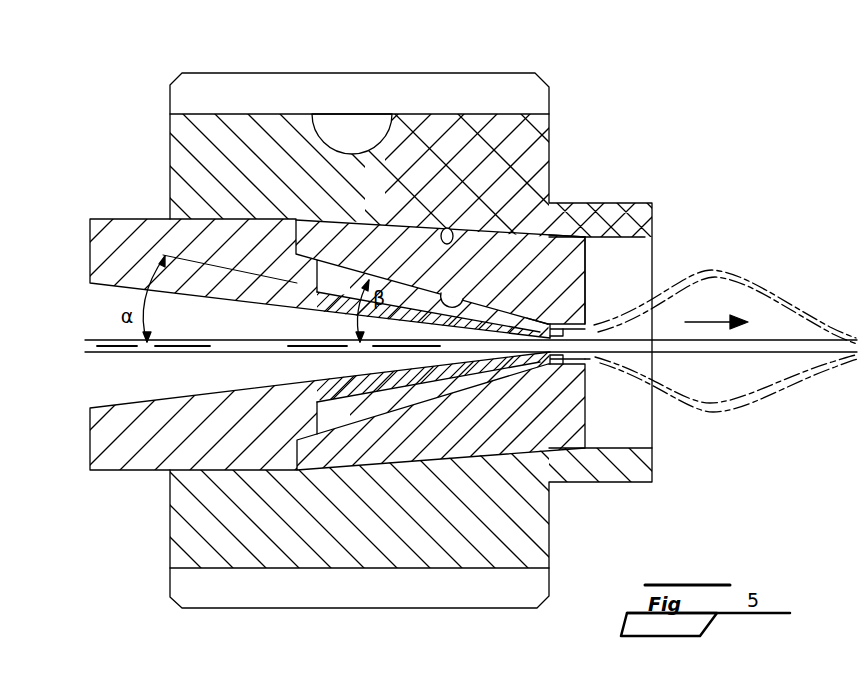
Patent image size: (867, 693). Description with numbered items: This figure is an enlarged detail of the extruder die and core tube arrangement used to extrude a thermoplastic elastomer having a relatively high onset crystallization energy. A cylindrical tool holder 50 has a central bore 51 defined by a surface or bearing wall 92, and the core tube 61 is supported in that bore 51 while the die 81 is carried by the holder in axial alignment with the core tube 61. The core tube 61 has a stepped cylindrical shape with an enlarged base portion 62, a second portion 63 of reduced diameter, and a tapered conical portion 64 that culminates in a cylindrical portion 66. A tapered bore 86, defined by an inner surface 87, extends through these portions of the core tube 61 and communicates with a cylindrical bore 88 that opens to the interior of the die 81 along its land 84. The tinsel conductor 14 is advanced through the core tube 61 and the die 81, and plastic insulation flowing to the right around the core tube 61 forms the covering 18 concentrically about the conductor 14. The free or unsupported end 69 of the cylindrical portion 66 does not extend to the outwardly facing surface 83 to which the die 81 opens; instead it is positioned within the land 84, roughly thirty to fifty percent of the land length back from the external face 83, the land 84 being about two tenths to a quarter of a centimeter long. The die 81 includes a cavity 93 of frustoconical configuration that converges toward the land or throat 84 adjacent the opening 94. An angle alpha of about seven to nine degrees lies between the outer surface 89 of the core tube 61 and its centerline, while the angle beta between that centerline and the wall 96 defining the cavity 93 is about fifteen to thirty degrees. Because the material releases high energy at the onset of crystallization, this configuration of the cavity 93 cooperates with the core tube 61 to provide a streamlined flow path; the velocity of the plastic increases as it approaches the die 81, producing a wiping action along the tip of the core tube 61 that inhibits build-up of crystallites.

The tinsel conductor 14 is at (257, 356).
The covering 18 is at (713, 264).
The tool holder 50 is at (160, 125).
The central bore 51 is at (460, 298).
The core tube 61 is at (337, 395).
The enlarged base portion 62 is at (123, 268).
The second portion 63 is at (280, 219).
The tapered conical portion 64 is at (377, 388).
The cylindrical portion 66 is at (552, 202).
The free end 69 is at (590, 324).
The die 81 is at (576, 235).
The outwardly facing surface 83 is at (575, 324).
The land 84 is at (587, 238).
The tapered bore 86 is at (249, 325).
The inner surface 87 is at (195, 392).
The cylindrical bore 88 is at (553, 358).
The outer surface 89 is at (440, 385).
The bearing wall 92 is at (410, 222).
The cavity 93 is at (358, 292).
The opening 94 is at (590, 363).
The wall 96 is at (527, 318).